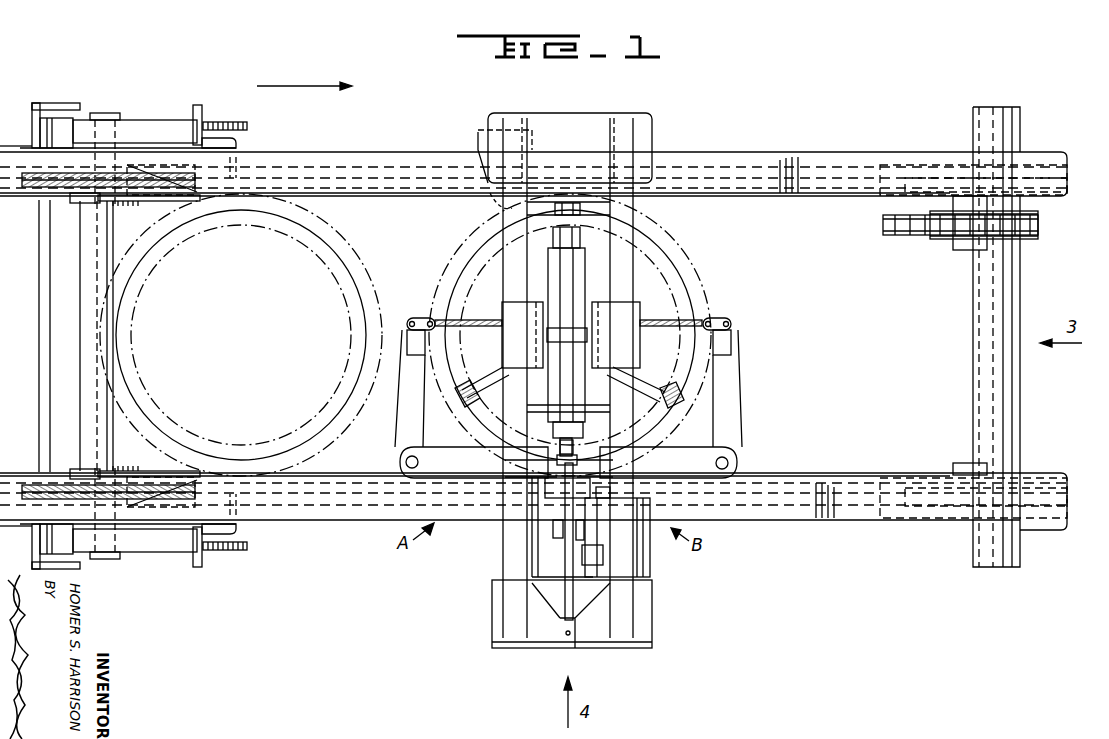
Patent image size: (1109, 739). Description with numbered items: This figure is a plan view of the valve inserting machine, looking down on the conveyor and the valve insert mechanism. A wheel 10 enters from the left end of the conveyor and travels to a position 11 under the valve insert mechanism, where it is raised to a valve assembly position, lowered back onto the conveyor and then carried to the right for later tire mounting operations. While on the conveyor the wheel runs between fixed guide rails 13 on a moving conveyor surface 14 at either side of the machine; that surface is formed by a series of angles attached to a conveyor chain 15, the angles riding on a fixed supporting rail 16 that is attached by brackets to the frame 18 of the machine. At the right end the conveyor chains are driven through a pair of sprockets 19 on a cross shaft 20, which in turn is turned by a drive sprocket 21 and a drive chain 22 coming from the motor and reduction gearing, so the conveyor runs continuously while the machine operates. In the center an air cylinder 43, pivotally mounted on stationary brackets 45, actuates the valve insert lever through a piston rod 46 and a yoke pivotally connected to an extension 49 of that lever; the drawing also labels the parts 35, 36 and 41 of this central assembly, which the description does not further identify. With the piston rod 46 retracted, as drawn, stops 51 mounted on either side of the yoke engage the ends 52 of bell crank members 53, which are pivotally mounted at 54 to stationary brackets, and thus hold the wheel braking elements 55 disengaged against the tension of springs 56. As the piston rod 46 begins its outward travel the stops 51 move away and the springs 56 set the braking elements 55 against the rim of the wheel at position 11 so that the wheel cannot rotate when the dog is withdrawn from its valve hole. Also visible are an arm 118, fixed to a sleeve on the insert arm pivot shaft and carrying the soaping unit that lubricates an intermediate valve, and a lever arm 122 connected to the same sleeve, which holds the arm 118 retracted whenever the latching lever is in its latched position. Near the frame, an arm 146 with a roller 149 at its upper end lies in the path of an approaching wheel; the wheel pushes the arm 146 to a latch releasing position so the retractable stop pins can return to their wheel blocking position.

The wheel 10 is at (283, 431).
The wheel position under valve insert mechanism 11 is at (690, 262).
The fixed guide rails 13 is at (827, 195).
The moving conveyor surface 14 is at (862, 200).
The conveyor chain 15 is at (832, 180).
The fixed supporting rail 16 is at (870, 476).
The frame 18 is at (563, 152).
The sprockets 19 is at (952, 176).
The cross shaft 20 is at (977, 343).
The drive sprocket 21 is at (945, 239).
The drive chain 22 is at (897, 236).
The spoke bolt 35 is at (564, 202).
The cross bar 36 is at (603, 216).
The shaft 41 is at (557, 460).
The air cylinder 43 is at (578, 292).
The stationary brackets 45 is at (512, 341).
The piston rod 46 is at (576, 455).
The extension of the lever 49 is at (569, 496).
The stops 51 is at (561, 498).
The ends of bell crank members 52 is at (552, 465).
The bell crank members 53 is at (405, 410).
The pivot of bell crank members 54 is at (405, 463).
The wheel braking elements 55 is at (433, 321).
The springs 56 is at (472, 319).
The arm 118 is at (553, 528).
The lever arm 122 is at (585, 530).
The arm 146 is at (484, 130).
The roller 149 is at (500, 209).